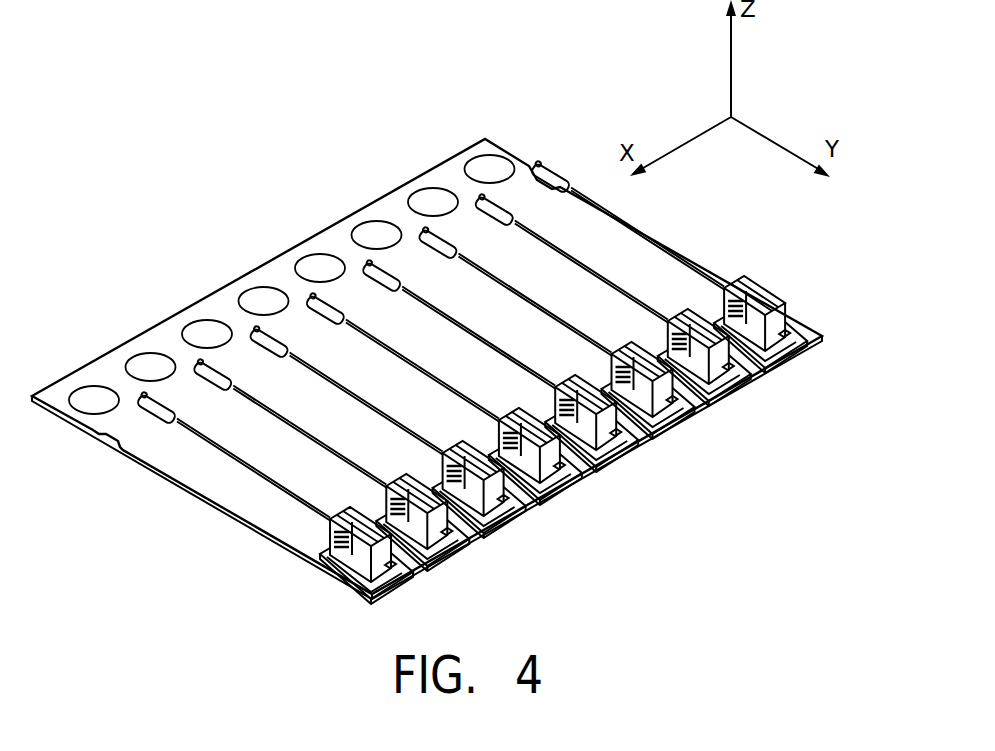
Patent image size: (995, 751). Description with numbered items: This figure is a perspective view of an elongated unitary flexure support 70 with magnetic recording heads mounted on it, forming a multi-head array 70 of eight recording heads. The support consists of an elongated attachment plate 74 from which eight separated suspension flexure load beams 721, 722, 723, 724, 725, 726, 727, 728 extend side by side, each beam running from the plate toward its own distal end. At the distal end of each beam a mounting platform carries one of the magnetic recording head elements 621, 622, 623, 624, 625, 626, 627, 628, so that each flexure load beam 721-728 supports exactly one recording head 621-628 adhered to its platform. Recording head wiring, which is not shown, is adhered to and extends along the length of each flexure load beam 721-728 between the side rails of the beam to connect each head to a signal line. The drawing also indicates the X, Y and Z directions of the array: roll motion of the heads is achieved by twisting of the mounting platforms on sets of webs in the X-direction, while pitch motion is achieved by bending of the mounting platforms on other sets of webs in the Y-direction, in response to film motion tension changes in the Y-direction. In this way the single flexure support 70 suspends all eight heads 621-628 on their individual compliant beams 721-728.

The unitary flexure support 70 is at (695, 247).
The elongated attachment plate 74 is at (488, 156).
The suspension flexure load beam 721 is at (285, 518).
The suspension flexure load beam 722 is at (341, 485).
The suspension flexure load beam 723 is at (396, 453).
The suspension flexure load beam 724 is at (452, 420).
The suspension flexure load beam 725 is at (508, 388).
The suspension flexure load beam 726 is at (564, 355).
The suspension flexure load beam 727 is at (619, 322).
The suspension flexure load beam 728 is at (675, 290).
The magnetic recording head 621 is at (381, 560).
The magnetic recording head 622 is at (437, 527).
The magnetic recording head 623 is at (494, 494).
The magnetic recording head 624 is at (550, 461).
The magnetic recording head 625 is at (606, 428).
The magnetic recording head 626 is at (662, 395).
The magnetic recording head 627 is at (719, 362).
The magnetic recording head 628 is at (775, 329).